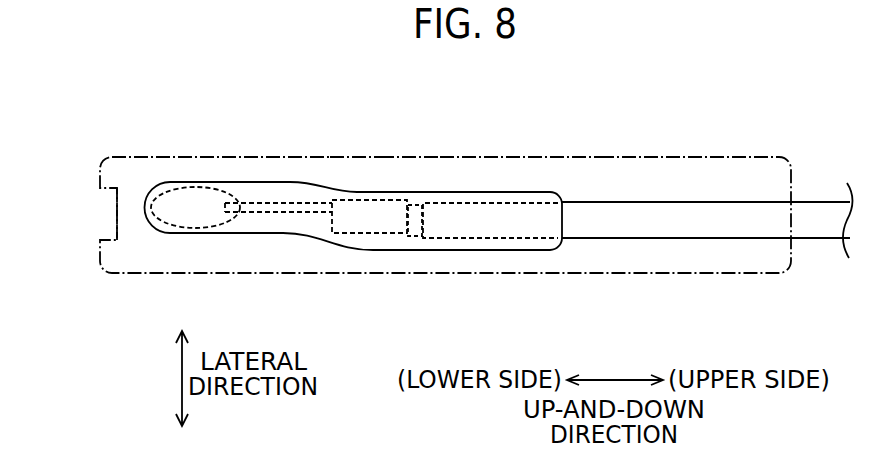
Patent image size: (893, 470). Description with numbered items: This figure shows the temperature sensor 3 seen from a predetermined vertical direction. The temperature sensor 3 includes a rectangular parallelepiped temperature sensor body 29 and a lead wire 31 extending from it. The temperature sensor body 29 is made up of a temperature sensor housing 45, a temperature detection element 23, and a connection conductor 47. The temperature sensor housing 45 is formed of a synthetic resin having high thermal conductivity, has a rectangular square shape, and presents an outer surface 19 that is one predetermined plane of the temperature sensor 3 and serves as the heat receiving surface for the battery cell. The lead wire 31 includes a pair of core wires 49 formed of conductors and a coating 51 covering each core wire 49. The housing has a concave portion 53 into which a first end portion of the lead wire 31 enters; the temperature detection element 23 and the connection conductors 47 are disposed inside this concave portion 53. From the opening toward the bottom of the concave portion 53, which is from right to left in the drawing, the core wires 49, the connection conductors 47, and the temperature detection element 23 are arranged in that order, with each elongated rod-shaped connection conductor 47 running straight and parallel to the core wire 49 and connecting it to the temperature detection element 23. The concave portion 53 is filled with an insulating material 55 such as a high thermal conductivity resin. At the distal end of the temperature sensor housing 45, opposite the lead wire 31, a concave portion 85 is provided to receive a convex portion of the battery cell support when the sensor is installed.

The temperature sensor 3 is at (649, 157).
The outer surface 19 is at (415, 157).
The temperature detection element 23 is at (213, 190).
The temperature sensor body 29 is at (470, 157).
The lead wire 31 is at (823, 207).
The temperature sensor housing 45 is at (354, 157).
The connection conductor 47 is at (293, 201).
The core wire 49 is at (413, 237).
The coating 51 is at (745, 207).
The concave portion 53 is at (515, 161).
The insulating material 55 is at (490, 220).
The concave portion 85 is at (117, 222).